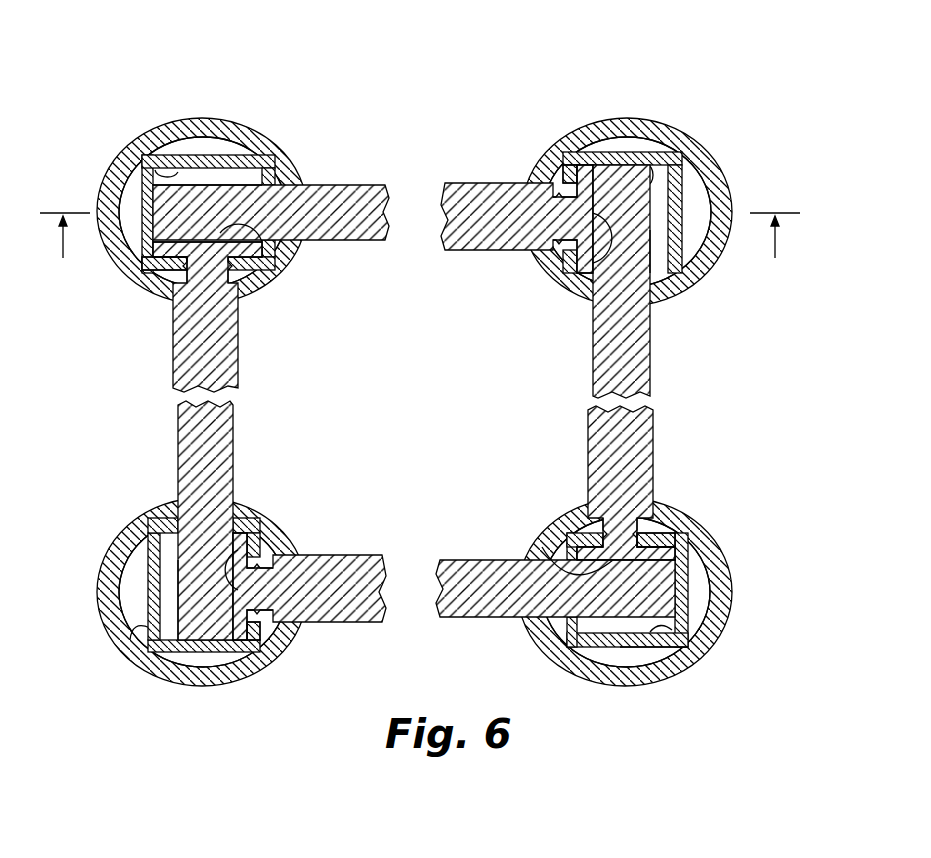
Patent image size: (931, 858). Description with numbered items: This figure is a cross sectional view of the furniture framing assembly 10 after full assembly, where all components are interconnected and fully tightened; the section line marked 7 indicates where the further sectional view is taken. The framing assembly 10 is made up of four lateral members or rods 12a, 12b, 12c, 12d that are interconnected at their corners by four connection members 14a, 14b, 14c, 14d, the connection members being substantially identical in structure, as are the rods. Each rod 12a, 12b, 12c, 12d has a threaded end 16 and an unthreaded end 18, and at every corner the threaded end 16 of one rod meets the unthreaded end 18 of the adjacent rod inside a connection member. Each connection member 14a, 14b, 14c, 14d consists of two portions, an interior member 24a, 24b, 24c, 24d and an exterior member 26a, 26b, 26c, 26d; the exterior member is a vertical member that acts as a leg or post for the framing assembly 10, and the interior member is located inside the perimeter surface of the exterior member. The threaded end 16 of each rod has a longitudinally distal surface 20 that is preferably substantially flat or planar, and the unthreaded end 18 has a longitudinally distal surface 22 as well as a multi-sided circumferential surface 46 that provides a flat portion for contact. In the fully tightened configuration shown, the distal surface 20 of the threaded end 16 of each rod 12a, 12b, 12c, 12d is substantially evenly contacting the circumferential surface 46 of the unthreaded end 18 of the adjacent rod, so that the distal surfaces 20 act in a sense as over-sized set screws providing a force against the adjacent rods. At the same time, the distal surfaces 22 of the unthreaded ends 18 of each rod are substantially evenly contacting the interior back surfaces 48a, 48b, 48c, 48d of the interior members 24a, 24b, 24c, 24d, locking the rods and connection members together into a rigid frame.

The furniture framing assembly 10 is at (438, 65).
The section line 7- 7 is at (420, 211).
The rod 12a is at (236, 443).
The rod 12b is at (452, 252).
The rod 12c is at (587, 430).
The rod 12d is at (377, 553).
The connection member 14a is at (323, 140).
The connection member 14b is at (724, 135).
The connection member 14c is at (726, 516).
The connection member 14d is at (122, 500).
The threaded end 16 is at (252, 285).
The unthreaded end 18 is at (237, 183).
The longitudinally distal surface 20 is at (253, 253).
The longitudinally distal surface 22 is at (140, 197).
The interior member 24a is at (187, 155).
The interior member 24b is at (593, 150).
The interior member 24c is at (597, 647).
The interior member 24d is at (147, 575).
The exterior member 26a is at (243, 118).
The exterior member 26b is at (703, 283).
The exterior member 26c is at (730, 610).
The exterior member 26d is at (213, 683).
The circumferential surface 46 is at (172, 263).
The interior back surface 48a is at (151, 144).
The interior back surface 48b is at (643, 183).
The interior back surface 48c is at (663, 660).
The interior back surface 48d is at (130, 635).